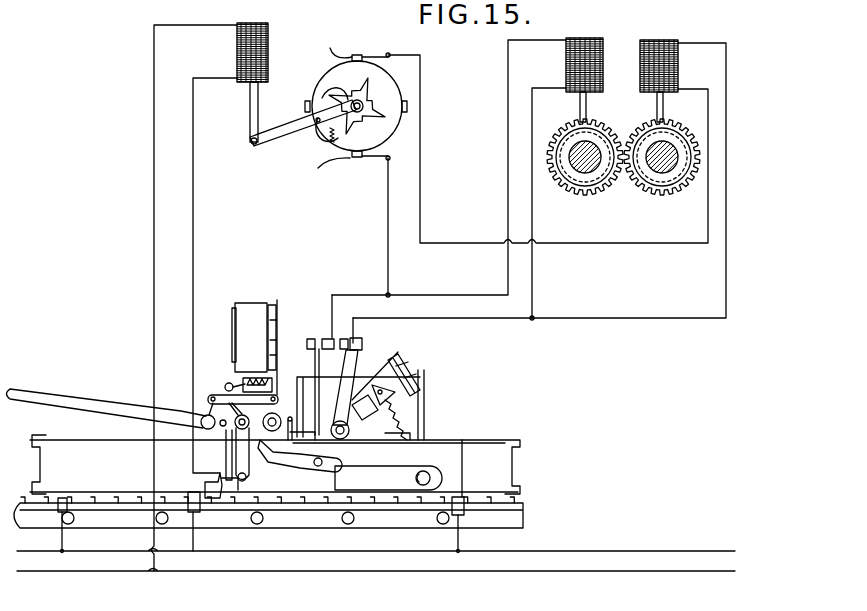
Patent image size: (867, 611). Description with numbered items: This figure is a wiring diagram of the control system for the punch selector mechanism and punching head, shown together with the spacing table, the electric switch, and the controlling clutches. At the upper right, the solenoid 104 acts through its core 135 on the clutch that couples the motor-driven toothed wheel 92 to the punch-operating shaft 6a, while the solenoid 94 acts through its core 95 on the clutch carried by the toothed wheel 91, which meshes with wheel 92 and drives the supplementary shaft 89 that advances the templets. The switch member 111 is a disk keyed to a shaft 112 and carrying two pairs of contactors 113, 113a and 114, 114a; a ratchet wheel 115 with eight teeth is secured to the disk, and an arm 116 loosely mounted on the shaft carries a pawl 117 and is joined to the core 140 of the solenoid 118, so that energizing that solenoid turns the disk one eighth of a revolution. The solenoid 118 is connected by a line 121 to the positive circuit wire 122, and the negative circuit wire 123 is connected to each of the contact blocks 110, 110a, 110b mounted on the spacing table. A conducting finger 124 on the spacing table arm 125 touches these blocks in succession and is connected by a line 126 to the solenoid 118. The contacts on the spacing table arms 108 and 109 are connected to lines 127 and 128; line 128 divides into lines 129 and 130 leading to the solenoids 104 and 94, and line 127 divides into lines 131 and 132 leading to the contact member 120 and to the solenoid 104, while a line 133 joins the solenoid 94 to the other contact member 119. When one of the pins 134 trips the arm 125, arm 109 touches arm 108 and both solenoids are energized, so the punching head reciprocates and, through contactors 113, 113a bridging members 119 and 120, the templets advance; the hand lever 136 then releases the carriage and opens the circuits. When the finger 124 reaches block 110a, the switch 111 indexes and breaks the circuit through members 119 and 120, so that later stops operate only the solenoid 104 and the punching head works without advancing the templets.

The punch-operating shaft 6a is at (583, 176).
The supplementary rotatable shaft 89 is at (677, 155).
The toothed wheel 91 is at (666, 197).
The toothed wheel 92 is at (595, 197).
The solenoid 94 is at (676, 46).
The core 95 is at (663, 108).
The solenoid 104 is at (587, 38).
The spacing table arm 108 is at (308, 344).
The spacing table arm 109 is at (352, 362).
The electrical contact-block 110 is at (62, 498).
The electrical contact-block 110a is at (200, 513).
The electrical contact-block 110b is at (61, 512).
The switch member 111 is at (387, 78).
The shaft 112 is at (350, 95).
The contactor 113 is at (337, 50).
The contactor 113a is at (340, 165).
The contactor 114 is at (305, 107).
The contactor 114a is at (407, 108).
The ratchet wheel 115 is at (388, 120).
The arm 116 is at (268, 148).
The pawl 117 is at (318, 95).
The solenoid 118 is at (237, 53).
The contact member 119 is at (370, 56).
The contact member 120 is at (362, 165).
The line 121 is at (154, 199).
The positive circuit wire 122 is at (330, 572).
The negative circuit wire 123 is at (441, 552).
The finger 124 is at (205, 486).
The spacing table arm 125 is at (228, 452).
The line 126 is at (193, 263).
The line 127 is at (340, 295).
The line 128 is at (482, 318).
The line 129 is at (532, 291).
The line 130 is at (690, 318).
The line 131 is at (389, 291).
The line 132 is at (476, 295).
The line 133 is at (460, 243).
The pin 134 is at (515, 499).
The core 135 is at (586, 107).
The hand lever 136 is at (65, 397).
The core 140 is at (250, 115).